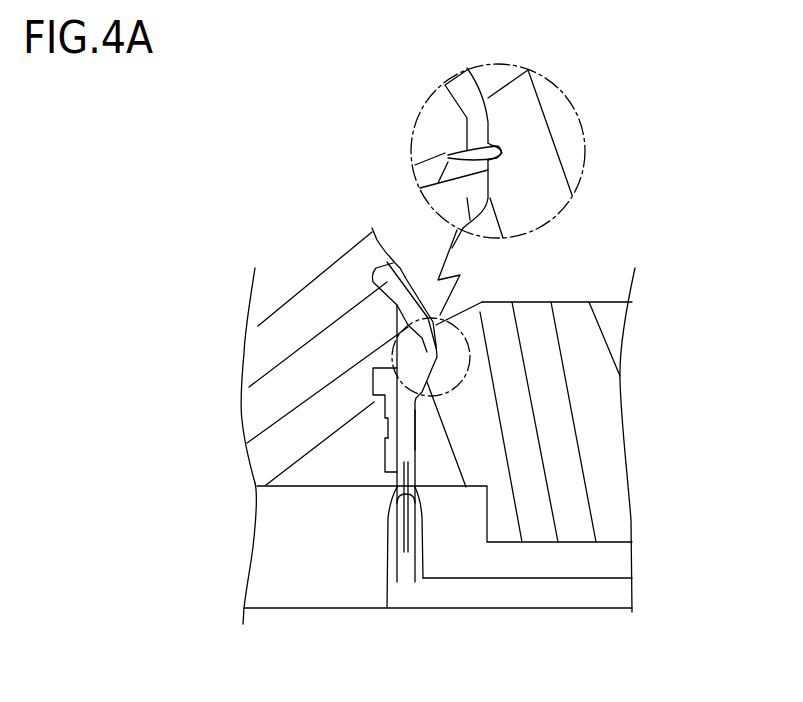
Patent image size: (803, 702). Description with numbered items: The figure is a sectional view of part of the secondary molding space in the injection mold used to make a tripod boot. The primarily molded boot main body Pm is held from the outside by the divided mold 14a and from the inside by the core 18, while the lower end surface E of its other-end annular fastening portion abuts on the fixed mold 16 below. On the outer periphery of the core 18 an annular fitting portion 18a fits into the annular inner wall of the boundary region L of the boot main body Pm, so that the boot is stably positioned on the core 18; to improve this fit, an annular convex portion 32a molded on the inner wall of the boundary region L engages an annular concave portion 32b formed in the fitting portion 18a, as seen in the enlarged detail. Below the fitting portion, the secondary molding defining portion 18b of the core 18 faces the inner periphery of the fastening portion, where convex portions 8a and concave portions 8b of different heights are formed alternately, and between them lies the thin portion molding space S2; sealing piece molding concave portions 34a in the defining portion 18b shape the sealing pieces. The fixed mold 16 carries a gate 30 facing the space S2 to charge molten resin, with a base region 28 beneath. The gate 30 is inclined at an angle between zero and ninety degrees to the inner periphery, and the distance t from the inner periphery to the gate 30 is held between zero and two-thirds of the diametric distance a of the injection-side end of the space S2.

The core 18 is at (582, 302).
The annular fitting portion 18a is at (397, 329).
The secondary molding defining portion 18b is at (373, 392).
The divided mold 14a is at (256, 463).
The fixed mold 16 is at (258, 572).
The base 28 is at (438, 593).
The gate 30 is at (386, 522).
The convex portion 8a is at (384, 444).
The concave portion 8b is at (384, 453).
The annular convex portion 32a is at (503, 152).
The annular concave portion 32b is at (448, 155).
The sealing piece molding concave portion 34a is at (416, 415).
The thin portion molding space S2 is at (416, 390).
The boundary region L is at (420, 346).
The boot main body Pm is at (369, 257).
The lower end surface E is at (383, 490).
The distance between inner periphery and gate t is at (376, 478).
The diametric distance of injection-side end of thin portion molding space a is at (378, 564).